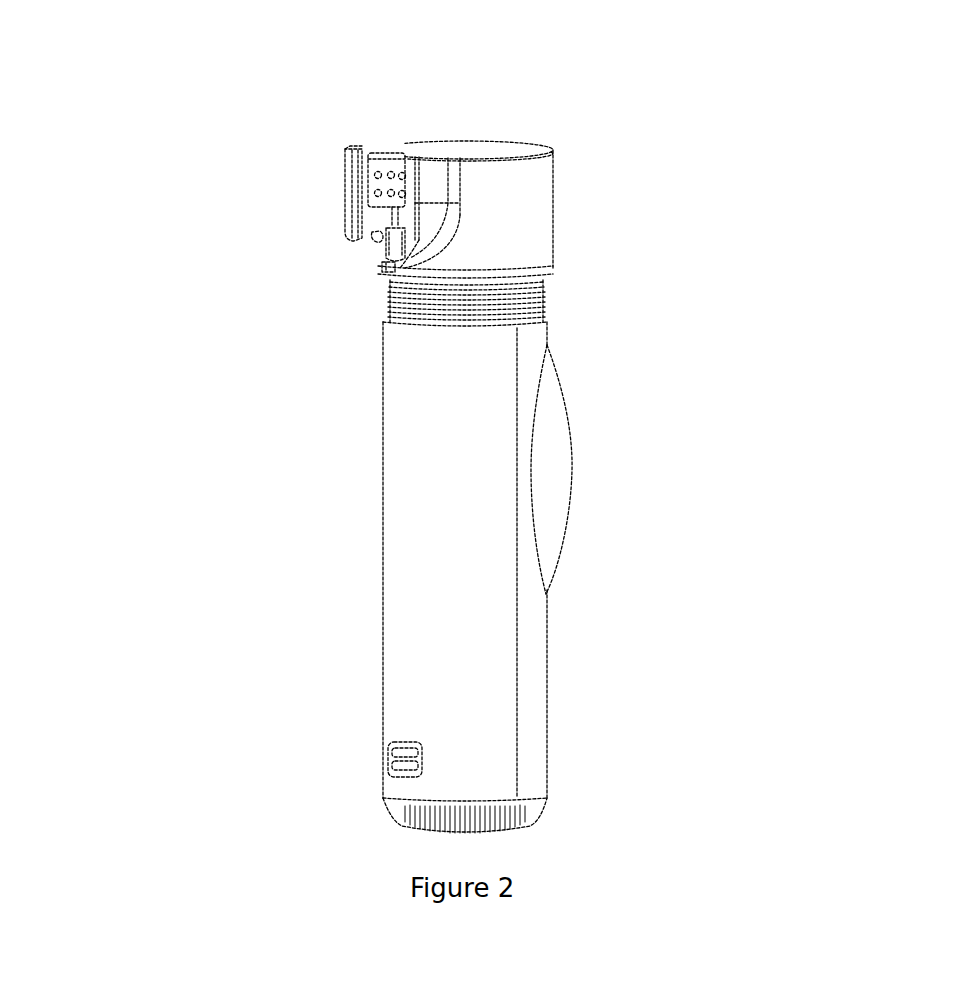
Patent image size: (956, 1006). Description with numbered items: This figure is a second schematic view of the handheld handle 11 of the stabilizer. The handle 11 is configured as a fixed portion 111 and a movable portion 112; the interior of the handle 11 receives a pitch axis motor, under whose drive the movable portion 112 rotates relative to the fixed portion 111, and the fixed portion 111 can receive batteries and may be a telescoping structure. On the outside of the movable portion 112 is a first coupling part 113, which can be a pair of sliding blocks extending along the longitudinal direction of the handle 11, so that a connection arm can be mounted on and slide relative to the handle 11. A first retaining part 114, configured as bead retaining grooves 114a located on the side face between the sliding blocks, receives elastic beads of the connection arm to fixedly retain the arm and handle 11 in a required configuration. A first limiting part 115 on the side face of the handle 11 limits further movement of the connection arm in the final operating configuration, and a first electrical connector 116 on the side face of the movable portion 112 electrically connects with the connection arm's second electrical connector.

The handle 11 is at (140, 62).
The fixed portion 111 is at (500, 608).
The movable portion 112 is at (535, 208).
The first coupling part 113 is at (350, 195).
The first retaining part 114 is at (378, 235).
The bead retaining grooves 114a is at (380, 238).
The first limiting part 115 is at (385, 268).
The first electrical connector 116 is at (380, 175).